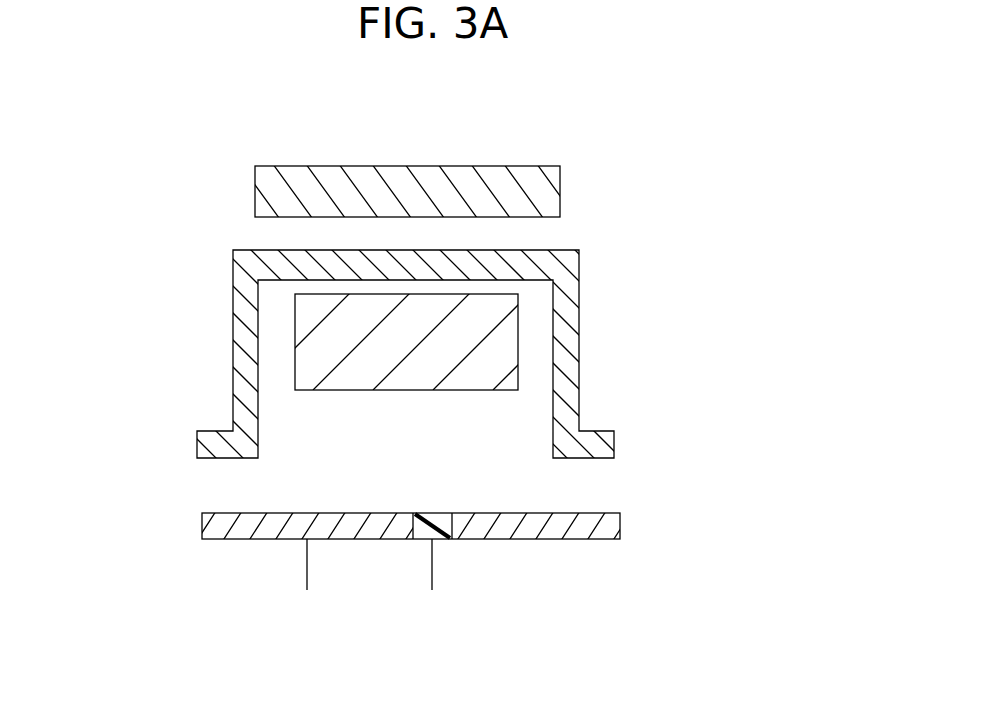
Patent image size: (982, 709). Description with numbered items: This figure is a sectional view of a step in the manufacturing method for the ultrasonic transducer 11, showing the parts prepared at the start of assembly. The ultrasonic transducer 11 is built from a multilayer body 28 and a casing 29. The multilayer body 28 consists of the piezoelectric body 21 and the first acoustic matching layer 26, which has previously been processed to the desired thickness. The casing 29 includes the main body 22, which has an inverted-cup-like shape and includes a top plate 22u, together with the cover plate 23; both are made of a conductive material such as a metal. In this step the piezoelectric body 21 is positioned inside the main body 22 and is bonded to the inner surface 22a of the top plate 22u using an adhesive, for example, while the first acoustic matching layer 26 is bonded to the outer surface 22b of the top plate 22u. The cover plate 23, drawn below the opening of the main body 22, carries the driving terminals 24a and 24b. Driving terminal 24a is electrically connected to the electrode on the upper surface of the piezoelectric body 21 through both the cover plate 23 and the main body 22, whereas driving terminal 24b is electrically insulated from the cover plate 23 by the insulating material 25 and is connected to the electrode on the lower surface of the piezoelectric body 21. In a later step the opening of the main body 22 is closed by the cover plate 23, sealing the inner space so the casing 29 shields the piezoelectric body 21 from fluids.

The ultrasonic transducer 11 is at (131, 236).
The piezoelectric body 21 is at (502, 305).
The main body 22 is at (580, 405).
The inner surface 22a is at (282, 278).
The outer surface 22b is at (313, 252).
The top plate 22u is at (428, 265).
The cover plate 23 is at (615, 513).
The driving terminal 24a is at (307, 552).
The driving terminal 24b is at (432, 572).
The insulating material 25 is at (443, 525).
The first acoustic matching layer 26 is at (538, 185).
The multilayer body 28 is at (742, 180).
The casing 29 is at (762, 345).